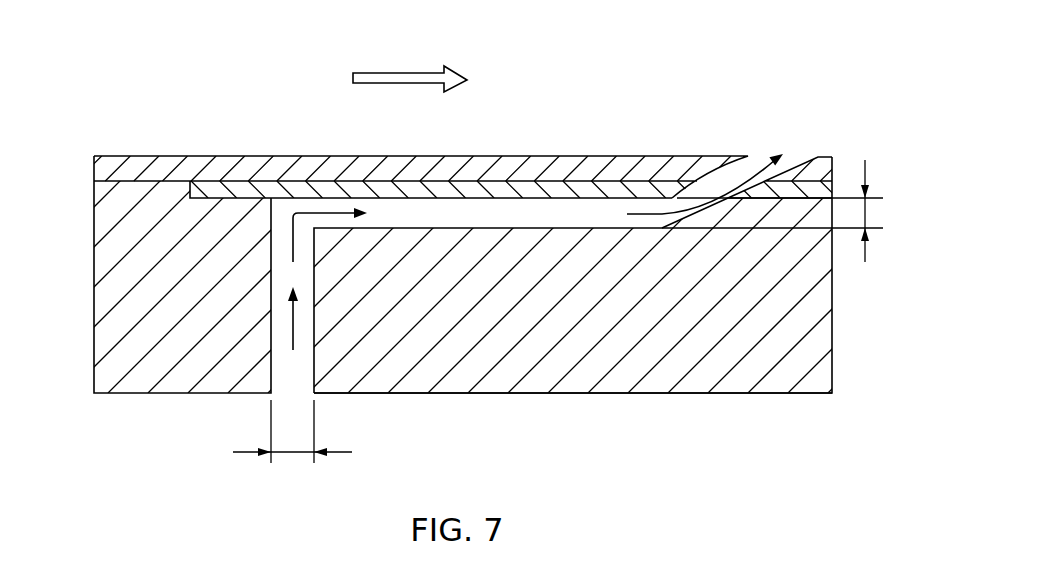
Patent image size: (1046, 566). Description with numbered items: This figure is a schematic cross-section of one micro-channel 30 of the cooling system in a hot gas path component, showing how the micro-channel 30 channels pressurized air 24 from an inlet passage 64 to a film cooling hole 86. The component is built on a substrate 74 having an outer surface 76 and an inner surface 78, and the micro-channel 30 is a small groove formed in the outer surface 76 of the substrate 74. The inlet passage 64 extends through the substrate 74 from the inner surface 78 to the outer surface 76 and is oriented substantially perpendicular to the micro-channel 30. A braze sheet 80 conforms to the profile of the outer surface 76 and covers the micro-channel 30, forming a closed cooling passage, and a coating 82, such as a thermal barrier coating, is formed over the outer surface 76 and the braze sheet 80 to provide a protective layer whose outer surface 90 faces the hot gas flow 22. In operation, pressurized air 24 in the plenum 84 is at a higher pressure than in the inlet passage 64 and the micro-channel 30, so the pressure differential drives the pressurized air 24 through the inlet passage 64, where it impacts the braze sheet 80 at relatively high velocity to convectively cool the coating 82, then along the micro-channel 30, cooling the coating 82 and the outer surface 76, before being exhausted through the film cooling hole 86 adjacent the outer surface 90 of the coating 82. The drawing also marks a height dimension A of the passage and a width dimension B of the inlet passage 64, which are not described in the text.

The hot gas flow 22 is at (402, 73).
The pressurized air 24 is at (306, 200).
The micro-channel 30 is at (521, 214).
The inlet passage 64 is at (300, 404).
The substrate 74 is at (845, 352).
The outer surface 76 is at (205, 197).
The inner surface 78 is at (532, 393).
The braze sheet 80 is at (820, 188).
The coating 82 is at (829, 169).
The plenum 84 is at (232, 428).
The film cooling hole 86 is at (758, 153).
The outer surface of coating 90 is at (665, 157).
The channel height dimension A is at (870, 212).
The inlet width dimension B is at (293, 455).